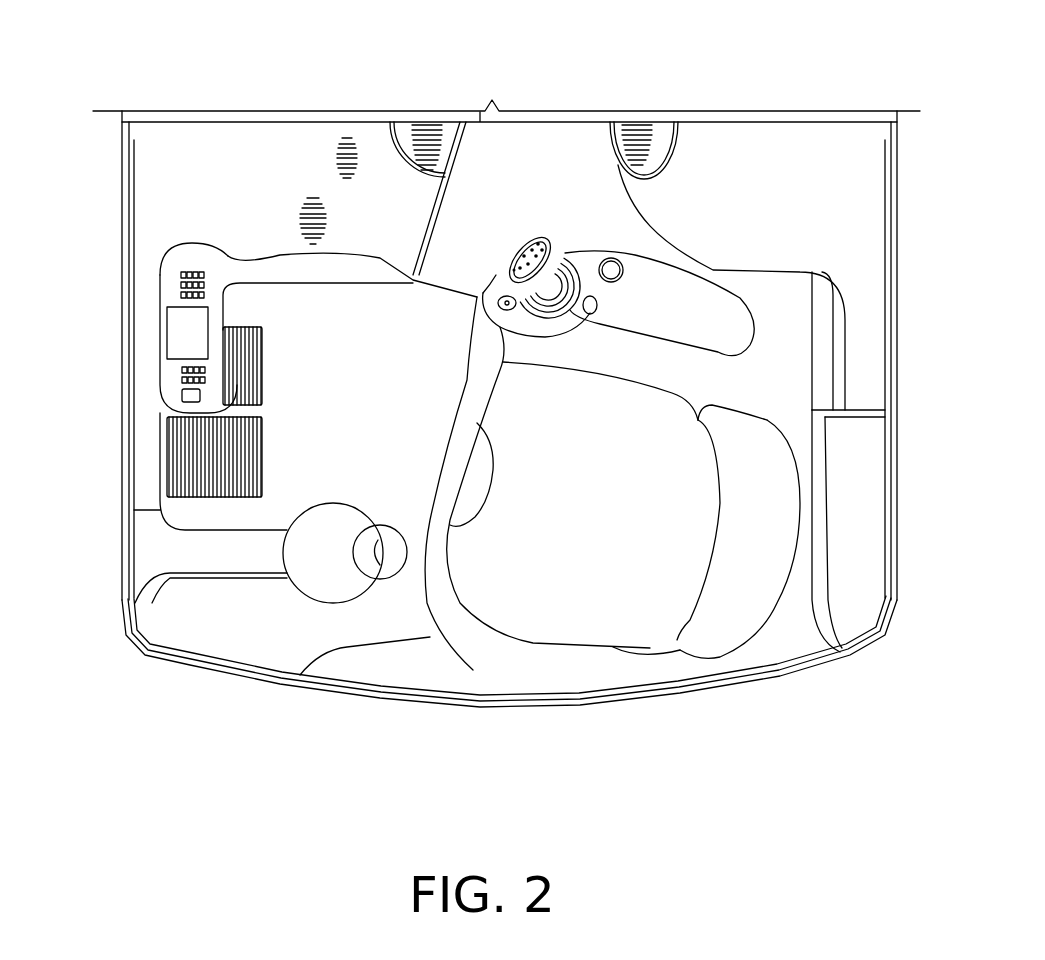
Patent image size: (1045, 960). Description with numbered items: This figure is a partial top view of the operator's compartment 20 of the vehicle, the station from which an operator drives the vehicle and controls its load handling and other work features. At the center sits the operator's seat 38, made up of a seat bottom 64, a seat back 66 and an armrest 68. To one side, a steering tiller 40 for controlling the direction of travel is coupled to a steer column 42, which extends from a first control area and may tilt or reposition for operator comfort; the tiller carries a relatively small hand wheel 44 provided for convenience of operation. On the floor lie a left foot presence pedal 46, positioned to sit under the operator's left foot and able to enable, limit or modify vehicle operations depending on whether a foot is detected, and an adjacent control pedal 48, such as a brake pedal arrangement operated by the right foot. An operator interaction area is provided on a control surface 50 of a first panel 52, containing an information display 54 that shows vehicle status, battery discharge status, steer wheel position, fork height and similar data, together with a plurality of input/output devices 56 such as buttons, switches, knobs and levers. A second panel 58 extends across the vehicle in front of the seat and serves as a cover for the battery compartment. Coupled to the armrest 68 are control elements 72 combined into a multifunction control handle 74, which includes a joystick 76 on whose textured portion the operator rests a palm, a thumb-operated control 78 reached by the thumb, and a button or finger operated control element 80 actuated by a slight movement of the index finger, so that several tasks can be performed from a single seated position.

The operator's compartment 20 is at (209, 740).
The operator's seat 38 is at (539, 603).
The steering tiller 40 is at (333, 563).
The steer column 42 is at (227, 553).
The hand wheel 44 is at (390, 570).
The left foot presence pedal 46 is at (200, 467).
The control pedal 48 is at (235, 408).
The control surface 50 is at (66, 326).
The first panel 52 is at (170, 283).
The information display 54 is at (187, 323).
The input/output devices 56 is at (182, 397).
The second panel 58 is at (390, 173).
The seat bottom 64 is at (567, 521).
The seat back 66 is at (732, 623).
The armrest 68 is at (645, 285).
The control elements 72 is at (498, 239).
The multifunction control handle 74 is at (577, 247).
The joystick 76 is at (540, 237).
The thumb-operated control 78 is at (513, 293).
The finger operated control element 80 is at (490, 298).